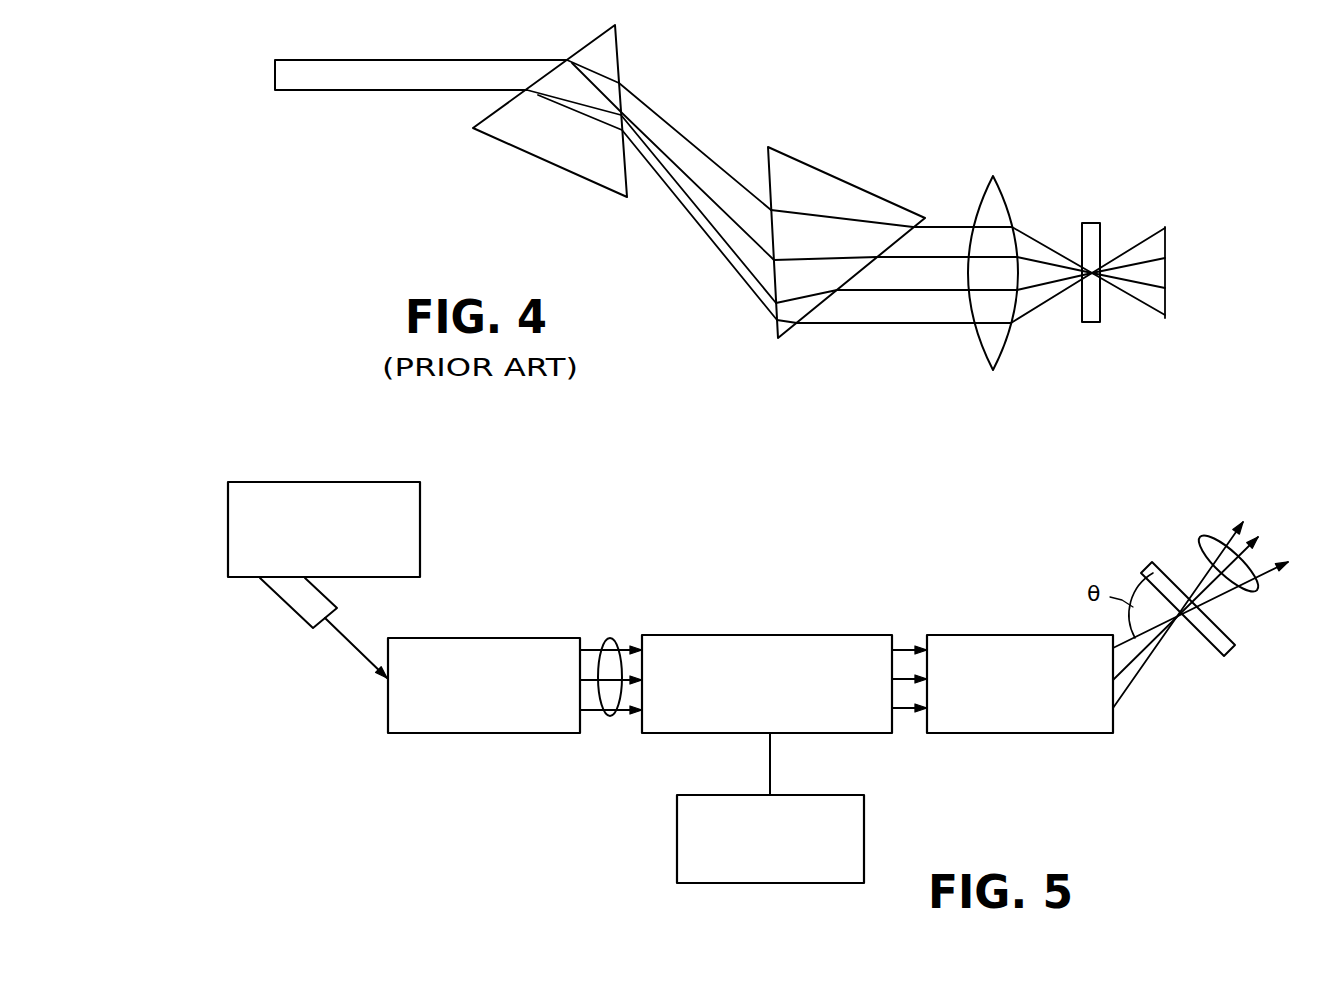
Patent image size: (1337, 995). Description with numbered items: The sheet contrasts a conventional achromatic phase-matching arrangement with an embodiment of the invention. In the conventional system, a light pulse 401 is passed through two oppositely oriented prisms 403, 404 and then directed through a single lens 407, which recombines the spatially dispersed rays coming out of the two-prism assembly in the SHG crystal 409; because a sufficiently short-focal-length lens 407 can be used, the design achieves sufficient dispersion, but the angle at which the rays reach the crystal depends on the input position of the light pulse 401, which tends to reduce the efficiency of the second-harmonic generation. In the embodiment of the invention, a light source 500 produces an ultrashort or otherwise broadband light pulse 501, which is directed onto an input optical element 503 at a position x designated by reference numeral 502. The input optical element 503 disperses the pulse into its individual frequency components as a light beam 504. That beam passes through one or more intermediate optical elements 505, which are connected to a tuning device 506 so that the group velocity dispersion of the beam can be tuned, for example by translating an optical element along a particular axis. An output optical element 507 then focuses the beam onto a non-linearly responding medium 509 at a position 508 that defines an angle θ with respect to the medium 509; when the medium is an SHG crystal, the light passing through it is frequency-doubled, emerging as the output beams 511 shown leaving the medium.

In FIG. 4, the light pulse 401 is at (387, 93).
In FIG. 4, the prism 403 is at (543, 159).
In FIG. 4, the prism 404 is at (840, 174).
In FIG. 4, the lens 407 is at (995, 178).
In FIG. 4, the SHG crystal 409 is at (1088, 223).
In FIG. 5, the light source 500 is at (422, 528).
In FIG. 5, the light pulse 501 is at (357, 652).
In FIG. 5, the position x 502 is at (387, 680).
In FIG. 5, the input optical element 503 is at (477, 638).
In FIG. 5, the light beam 504 is at (613, 714).
In FIG. 5, the intermediate optical element 505 is at (780, 636).
In FIG. 5, the tuning device 506 is at (863, 818).
In FIG. 5, the output optical element 507 is at (987, 634).
In FIG. 5, the position 508 is at (1187, 632).
In FIG. 5, the non-linearly responding medium 509 is at (1153, 563).
In FIG. 5, the output beams 511 is at (1257, 590).